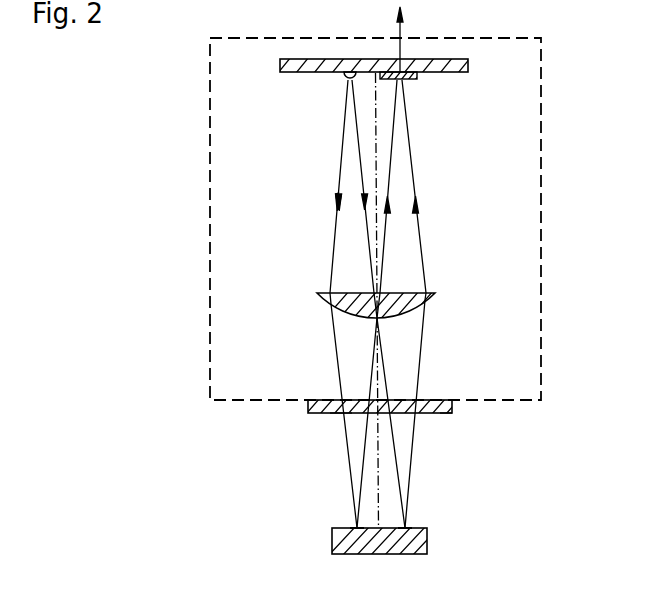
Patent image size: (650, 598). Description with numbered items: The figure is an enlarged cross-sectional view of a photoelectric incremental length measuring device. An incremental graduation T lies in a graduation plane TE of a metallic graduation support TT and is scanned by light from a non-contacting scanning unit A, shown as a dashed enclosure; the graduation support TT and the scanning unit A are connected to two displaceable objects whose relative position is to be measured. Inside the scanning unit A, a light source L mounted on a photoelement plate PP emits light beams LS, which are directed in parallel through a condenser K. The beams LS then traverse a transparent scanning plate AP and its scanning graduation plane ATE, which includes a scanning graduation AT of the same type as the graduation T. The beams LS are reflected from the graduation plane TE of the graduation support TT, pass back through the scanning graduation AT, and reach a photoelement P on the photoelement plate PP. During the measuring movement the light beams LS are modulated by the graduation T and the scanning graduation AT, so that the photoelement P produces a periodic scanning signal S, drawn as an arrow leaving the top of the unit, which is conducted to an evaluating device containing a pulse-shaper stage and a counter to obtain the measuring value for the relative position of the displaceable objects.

The scanning unit A is at (541, 88).
The photoelement plate PP is at (468, 62).
The light source L is at (346, 76).
The photoelement P is at (410, 80).
The scanning signal S is at (401, 20).
The light beams LS is at (358, 168).
The condenser K is at (430, 293).
The scanning plate AP is at (427, 403).
The scanning graduation AT is at (340, 413).
The scanning graduation plane ATE is at (452, 412).
The graduation support TT is at (417, 545).
The graduation plane TE is at (355, 526).
The incremental graduation T is at (402, 527).